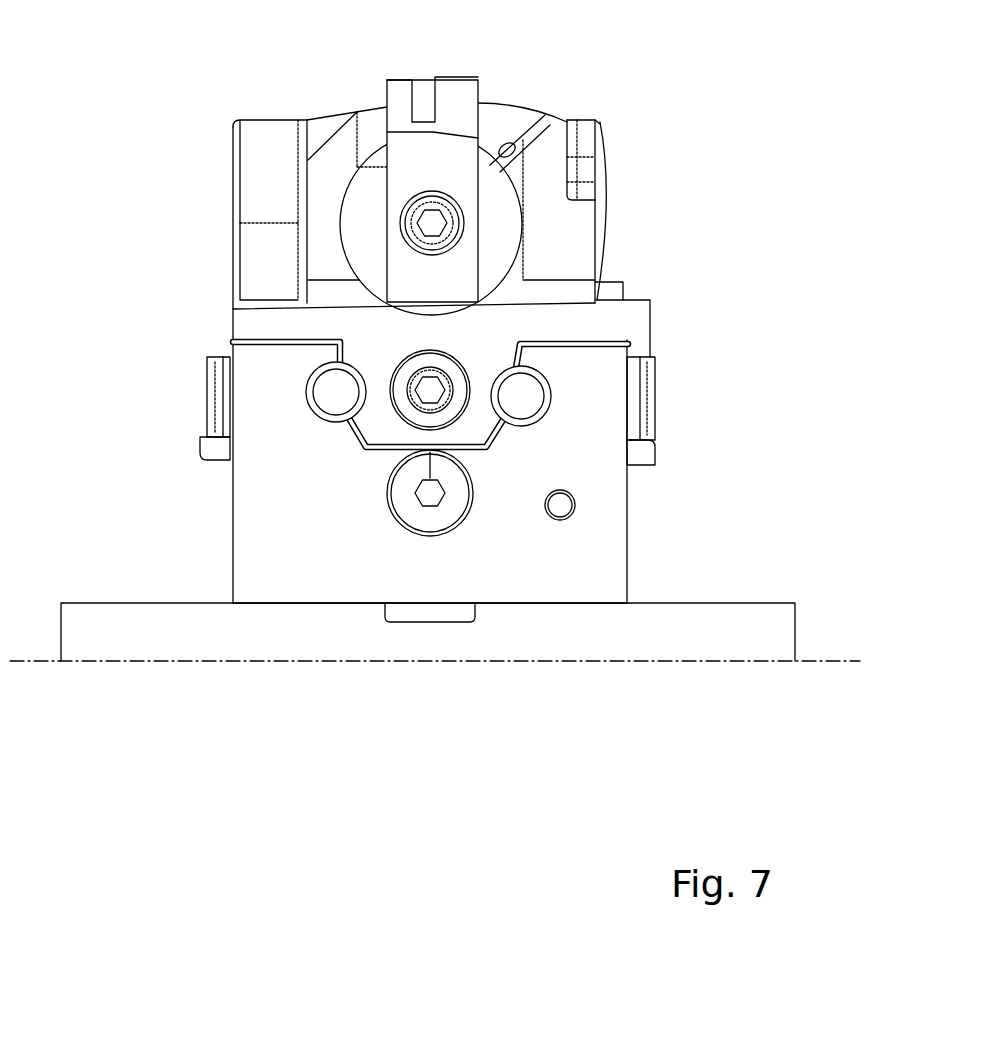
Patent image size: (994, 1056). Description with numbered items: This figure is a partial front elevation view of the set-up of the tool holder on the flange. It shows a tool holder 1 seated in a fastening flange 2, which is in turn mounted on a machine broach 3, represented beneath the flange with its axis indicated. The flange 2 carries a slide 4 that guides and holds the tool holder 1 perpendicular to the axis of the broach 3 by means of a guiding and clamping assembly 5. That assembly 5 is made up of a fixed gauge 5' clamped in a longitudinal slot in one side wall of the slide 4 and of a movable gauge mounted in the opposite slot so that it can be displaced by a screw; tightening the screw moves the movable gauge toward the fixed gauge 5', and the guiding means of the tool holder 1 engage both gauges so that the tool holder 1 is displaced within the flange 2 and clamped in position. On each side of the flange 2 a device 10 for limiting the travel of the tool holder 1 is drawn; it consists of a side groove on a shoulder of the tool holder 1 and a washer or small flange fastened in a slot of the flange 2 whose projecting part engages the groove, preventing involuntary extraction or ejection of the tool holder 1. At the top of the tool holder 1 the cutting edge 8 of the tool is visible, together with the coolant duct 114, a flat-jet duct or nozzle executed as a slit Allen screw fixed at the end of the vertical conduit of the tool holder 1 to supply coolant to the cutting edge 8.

The tool holder 1 is at (498, 124).
The cutting edge 8 is at (424, 96).
The coolant duct 114 is at (555, 118).
The fastening flange 2 is at (590, 580).
The slide 4 is at (520, 355).
The fixed gauge 5' is at (603, 448).
The guiding and clamping assembly 5 is at (308, 464).
The device for limiting the travel 10 is at (195, 382).
The machine broach 3 is at (572, 633).